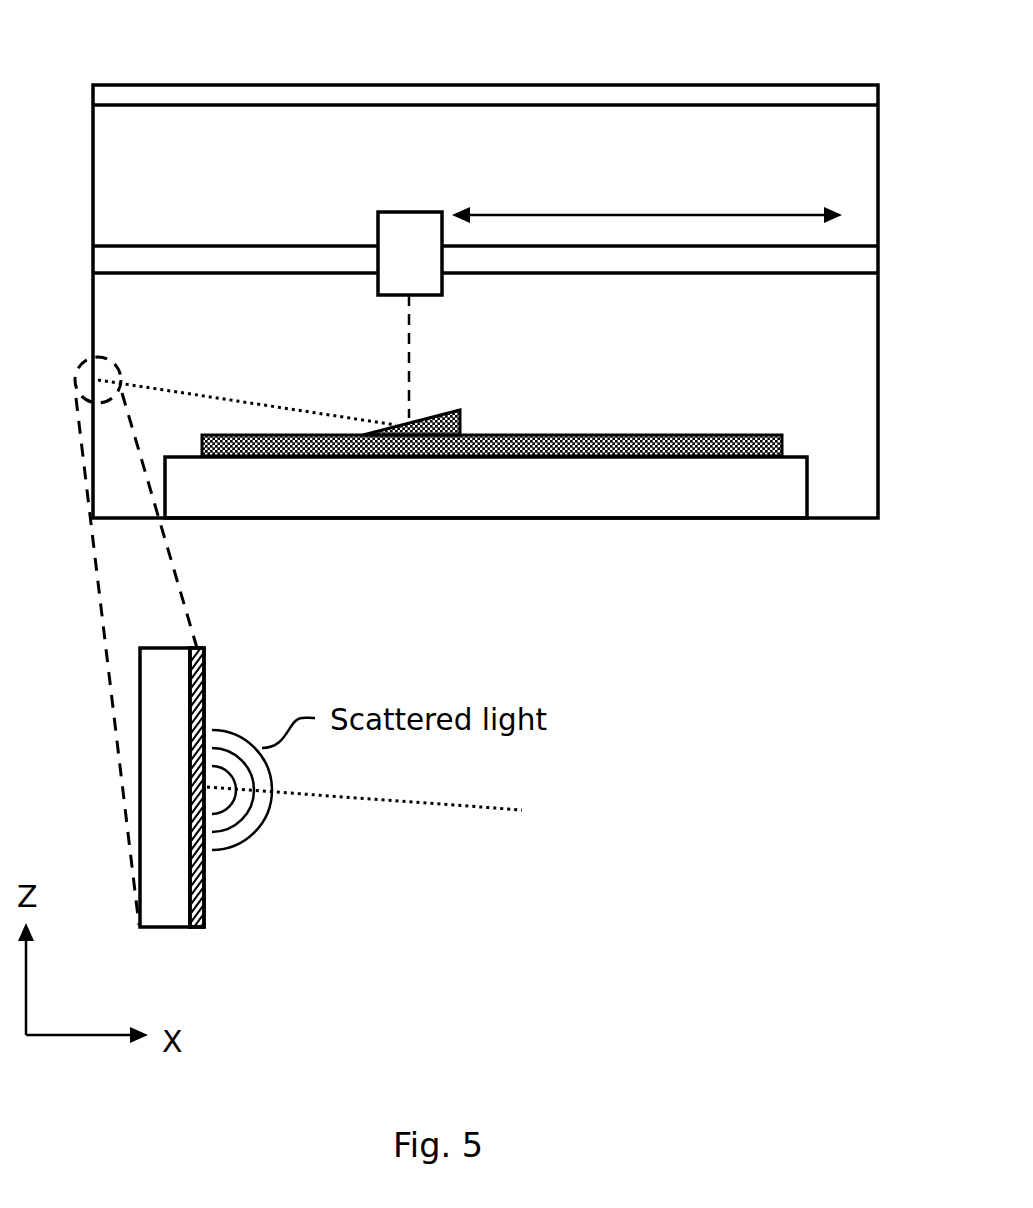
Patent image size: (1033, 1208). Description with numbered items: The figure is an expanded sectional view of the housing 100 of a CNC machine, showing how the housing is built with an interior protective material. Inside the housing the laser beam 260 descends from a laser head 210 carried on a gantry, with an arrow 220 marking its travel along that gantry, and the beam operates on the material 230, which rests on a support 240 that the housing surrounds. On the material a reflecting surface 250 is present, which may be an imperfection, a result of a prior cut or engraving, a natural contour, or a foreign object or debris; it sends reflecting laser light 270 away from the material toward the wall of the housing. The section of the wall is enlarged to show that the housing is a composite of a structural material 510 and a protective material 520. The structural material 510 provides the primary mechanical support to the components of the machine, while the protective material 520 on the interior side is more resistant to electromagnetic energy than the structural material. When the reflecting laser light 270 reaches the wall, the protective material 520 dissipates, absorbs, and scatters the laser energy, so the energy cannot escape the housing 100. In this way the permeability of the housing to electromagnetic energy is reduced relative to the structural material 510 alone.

The housing 100 is at (197, 83).
The laser 210 is at (377, 214).
The laser scanning direction 220 is at (713, 245).
The material 230 is at (240, 458).
The support 240 is at (713, 519).
The reflecting surface 250 is at (460, 408).
The laser beam 260 is at (411, 327).
The reflecting laser light 270 is at (478, 807).
The structural material 510 is at (163, 648).
The protective material 520 is at (204, 678).